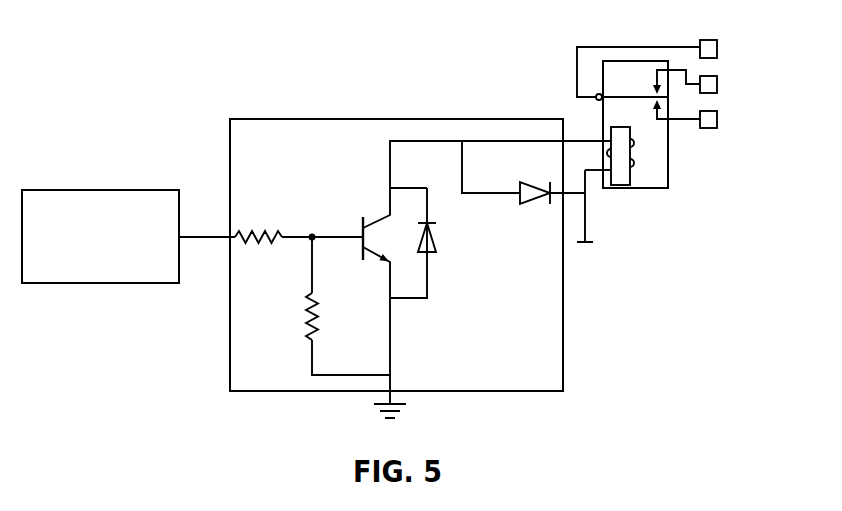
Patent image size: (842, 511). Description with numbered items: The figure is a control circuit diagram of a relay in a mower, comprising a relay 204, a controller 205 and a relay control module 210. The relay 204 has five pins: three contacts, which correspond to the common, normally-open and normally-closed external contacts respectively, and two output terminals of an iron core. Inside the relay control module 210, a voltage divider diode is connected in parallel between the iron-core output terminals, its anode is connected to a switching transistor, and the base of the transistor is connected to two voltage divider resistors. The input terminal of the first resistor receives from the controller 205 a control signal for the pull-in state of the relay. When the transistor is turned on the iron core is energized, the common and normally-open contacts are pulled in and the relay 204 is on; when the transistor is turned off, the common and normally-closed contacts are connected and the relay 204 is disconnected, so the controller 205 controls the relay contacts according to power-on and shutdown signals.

The relay 204 is at (655, 188).
The controller 205 is at (100, 283).
The relay control module 210 is at (393, 119).